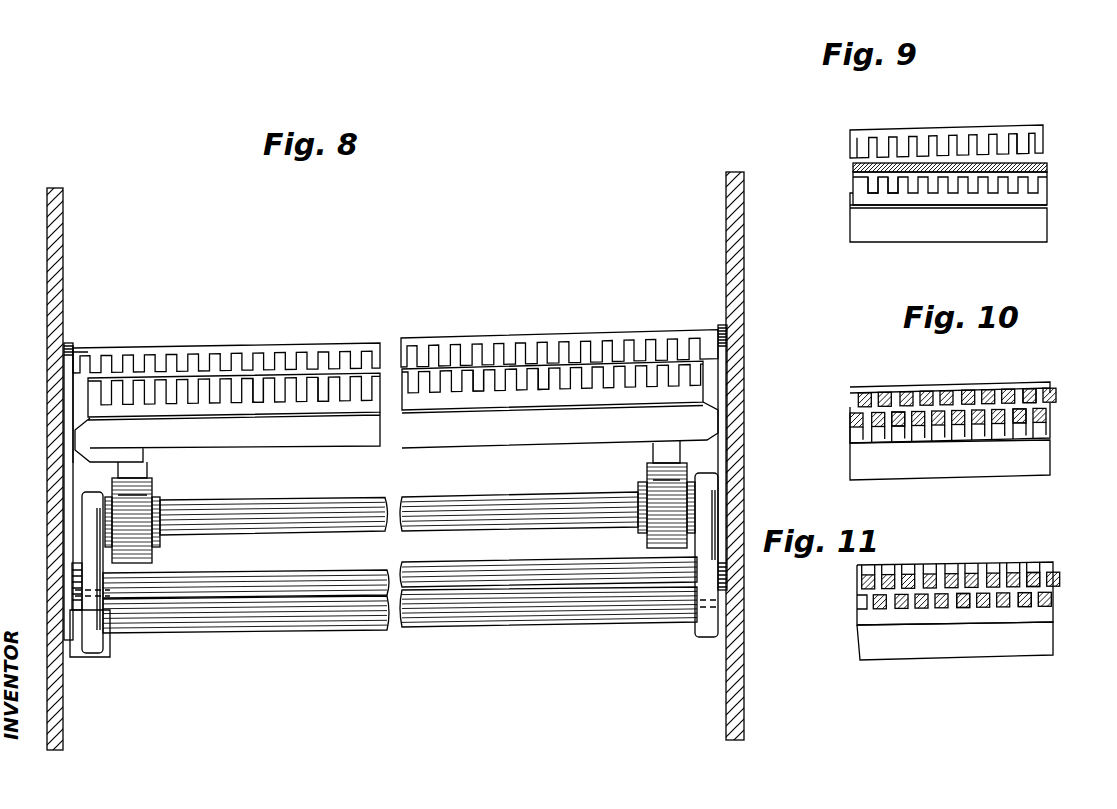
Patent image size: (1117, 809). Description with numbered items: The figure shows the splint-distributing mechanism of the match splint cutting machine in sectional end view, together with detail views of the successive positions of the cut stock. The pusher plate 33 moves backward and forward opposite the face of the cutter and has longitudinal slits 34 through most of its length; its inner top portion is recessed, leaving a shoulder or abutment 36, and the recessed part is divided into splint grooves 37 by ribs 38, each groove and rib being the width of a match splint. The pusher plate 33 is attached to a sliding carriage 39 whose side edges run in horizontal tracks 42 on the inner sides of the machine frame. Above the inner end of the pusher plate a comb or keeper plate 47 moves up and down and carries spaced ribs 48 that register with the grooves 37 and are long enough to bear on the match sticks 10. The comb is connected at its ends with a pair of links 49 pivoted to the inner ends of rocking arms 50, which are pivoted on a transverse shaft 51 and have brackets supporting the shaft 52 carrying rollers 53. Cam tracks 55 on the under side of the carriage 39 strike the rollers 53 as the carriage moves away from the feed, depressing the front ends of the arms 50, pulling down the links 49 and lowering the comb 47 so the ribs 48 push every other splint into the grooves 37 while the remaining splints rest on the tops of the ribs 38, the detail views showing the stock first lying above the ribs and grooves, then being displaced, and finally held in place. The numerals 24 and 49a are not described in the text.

In FIG. 9, the match sticks 10 is at (1047, 163).
In FIG. 10, the match sticks 10 is at (865, 393).
In FIG. 11, the match sticks 10 is at (1037, 573).
In FIG. 8, the side frame plate 24 is at (63, 220).
In FIG. 8, the pusher plate 33 is at (440, 408).
In FIG. 9, the pusher plate 33 is at (952, 200).
In FIG. 10, the pusher plate 33 is at (1040, 432).
In FIG. 11, the pusher plate 33 is at (1007, 615).
In FIG. 8, the longitudinal slits 34 is at (320, 380).
In FIG. 8, the shoulder or abutment 36 is at (255, 390).
In FIG. 8, the splint grooves 37 is at (541, 392).
In FIG. 9, the splint grooves 37 is at (893, 193).
In FIG. 10, the splint grooves 37 is at (900, 432).
In FIG. 11, the splint grooves 37 is at (978, 609).
In FIG. 8, the ribs 38 is at (478, 388).
In FIG. 9, the ribs 38 is at (876, 185).
In FIG. 10, the ribs 38 is at (1028, 412).
In FIG. 11, the ribs 38 is at (1030, 608).
In FIG. 8, the sliding carriage 39 is at (585, 433).
In FIG. 9, the sliding carriage 39 is at (903, 233).
In FIG. 10, the sliding carriage 39 is at (953, 470).
In FIG. 11, the sliding carriage 39 is at (1043, 642).
In FIG. 8, the horizontal tracks 42 is at (68, 470).
In FIG. 8, the comb or keeper plate 47 is at (445, 343).
In FIG. 9, the comb or keeper plate 47 is at (993, 133).
In FIG. 10, the comb or keeper plate 47 is at (980, 383).
In FIG. 11, the comb or keeper plate 47 is at (1047, 565).
In FIG. 8, the ribs 48 is at (170, 367).
In FIG. 9, the ribs 48 is at (1030, 148).
In FIG. 10, the ribs 48 is at (1036, 397).
In FIG. 11, the ribs 48 is at (1025, 588).
In FIG. 8, the links 49 is at (75, 387).
In FIG. 8, the roller 49a is at (215, 587).
In FIG. 8, the rocking arms 50 is at (95, 630).
In FIG. 8, the transverse shaft 51 is at (298, 622).
In FIG. 8, the shaft 52 is at (310, 507).
In FIG. 8, the rollers 53 is at (140, 512).
In FIG. 8, the cam tracks 55 is at (137, 468).